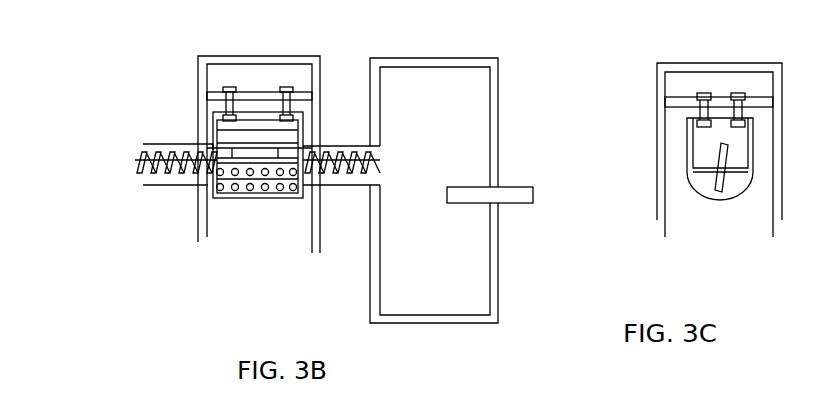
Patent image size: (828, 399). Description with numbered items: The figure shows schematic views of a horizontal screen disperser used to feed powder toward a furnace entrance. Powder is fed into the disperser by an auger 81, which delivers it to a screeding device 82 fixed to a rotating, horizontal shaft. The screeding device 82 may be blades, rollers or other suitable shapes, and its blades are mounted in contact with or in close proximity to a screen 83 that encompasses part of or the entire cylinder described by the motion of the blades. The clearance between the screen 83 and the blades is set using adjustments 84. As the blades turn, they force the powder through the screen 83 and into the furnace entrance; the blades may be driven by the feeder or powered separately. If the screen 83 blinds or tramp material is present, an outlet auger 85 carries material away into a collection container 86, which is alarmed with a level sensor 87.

In FIG. 3B, the auger 81 is at (140, 157).
In FIG. 3C, the screeding device 82 is at (697, 165).
In FIG. 3B, the screen 83 is at (277, 190).
In FIG. 3C, the screen 83 is at (695, 187).
In FIG. 3B, the adjustments 84 is at (288, 88).
In FIG. 3C, the adjustments 84 is at (735, 93).
In FIG. 3B, the outlet auger 85 is at (357, 173).
In FIG. 3B, the collection container 86 is at (498, 58).
In FIG. 3B, the level sensor 87 is at (533, 185).